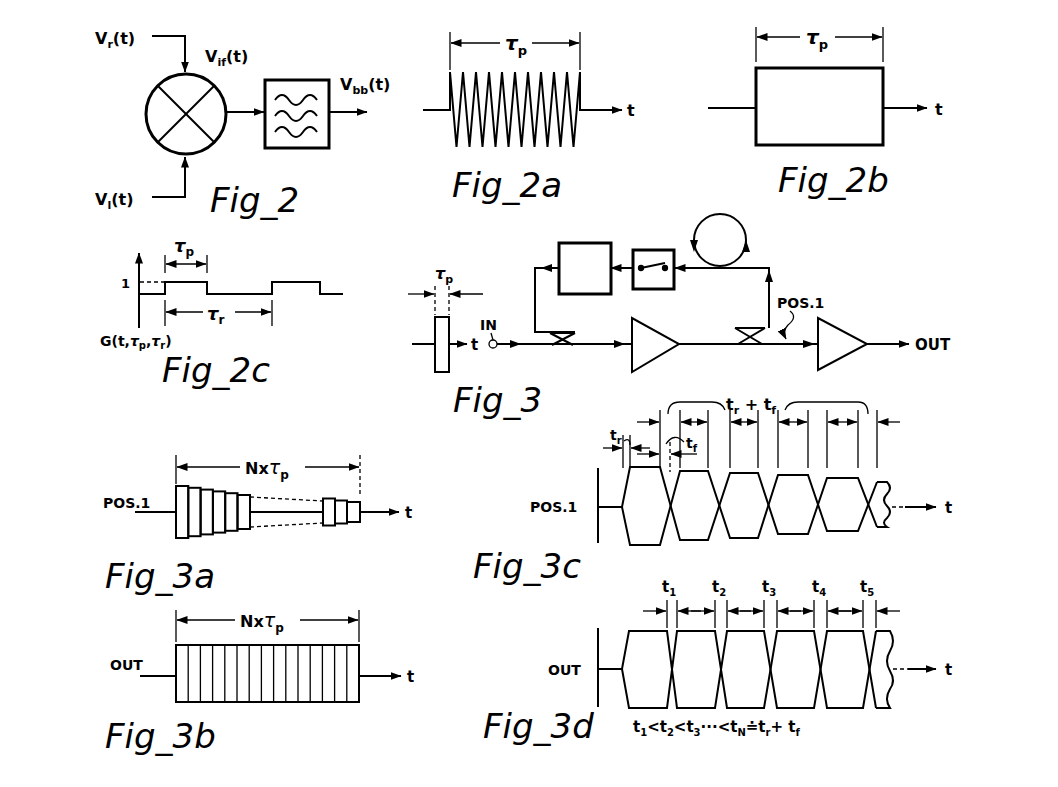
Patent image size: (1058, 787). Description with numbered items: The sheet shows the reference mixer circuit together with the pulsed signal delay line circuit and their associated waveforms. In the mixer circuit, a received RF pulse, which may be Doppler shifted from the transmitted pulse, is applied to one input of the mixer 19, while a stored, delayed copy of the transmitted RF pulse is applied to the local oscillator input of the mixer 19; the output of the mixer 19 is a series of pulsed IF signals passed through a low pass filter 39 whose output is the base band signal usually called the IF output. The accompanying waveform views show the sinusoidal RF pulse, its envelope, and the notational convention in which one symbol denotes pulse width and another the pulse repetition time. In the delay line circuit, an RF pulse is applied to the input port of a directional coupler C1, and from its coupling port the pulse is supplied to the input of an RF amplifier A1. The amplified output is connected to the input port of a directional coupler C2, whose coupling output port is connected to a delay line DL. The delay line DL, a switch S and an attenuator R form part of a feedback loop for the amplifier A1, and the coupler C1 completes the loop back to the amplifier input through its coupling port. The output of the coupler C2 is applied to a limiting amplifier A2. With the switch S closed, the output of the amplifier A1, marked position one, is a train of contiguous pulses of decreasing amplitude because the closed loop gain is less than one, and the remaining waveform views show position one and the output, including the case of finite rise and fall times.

In FIG. 2, the mixer 19 is at (153, 94).
In FIG. 2, the low pass filter 39 is at (278, 80).
In FIG. 3, the attenuator R is at (576, 244).
In FIG. 3, the switch S is at (644, 250).
In FIG. 3, the delay line DL is at (747, 221).
In FIG. 3, the RF amplifier A1 is at (666, 339).
In FIG. 3, the limiting amplifier A2 is at (856, 339).
In FIG. 3, the directional coupler C1 is at (563, 348).
In FIG. 3, the directional coupler C2 is at (752, 347).